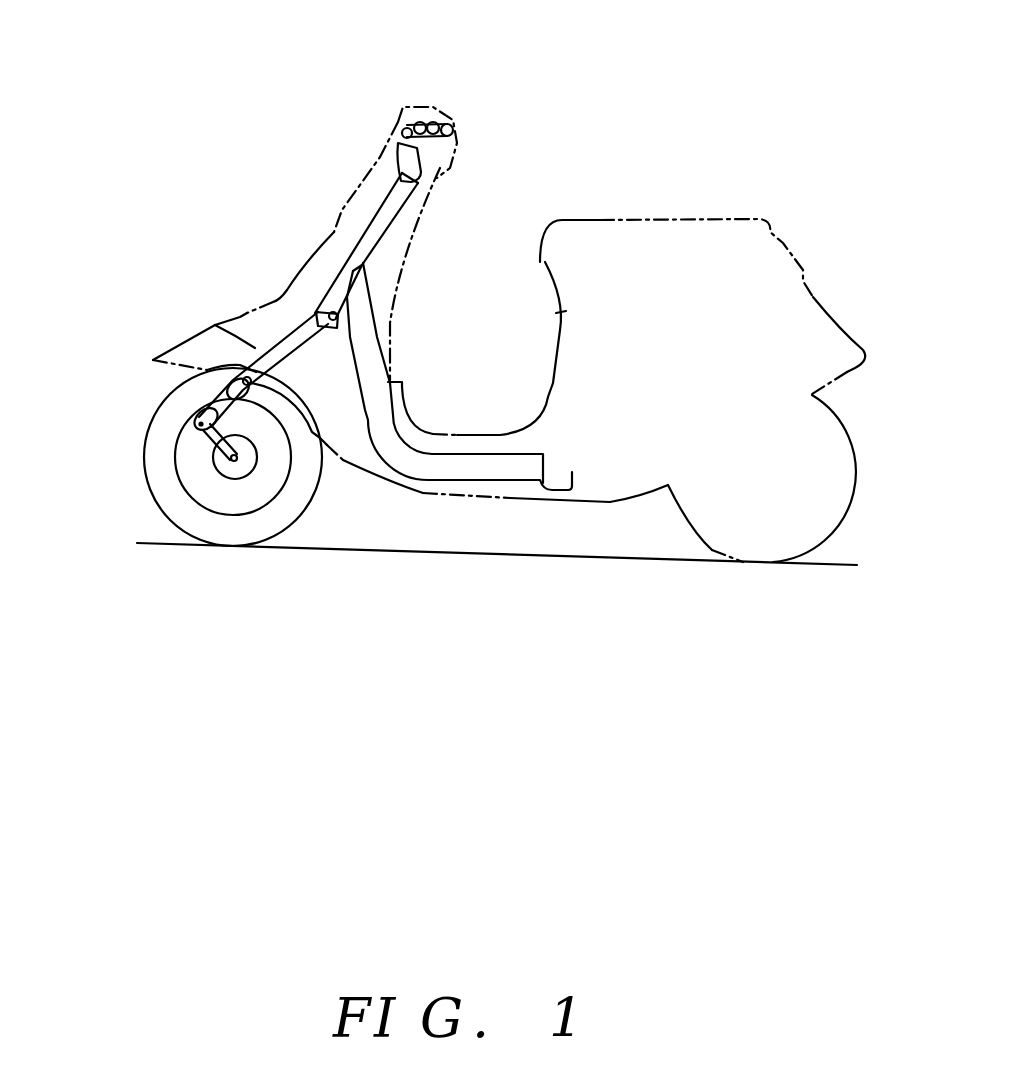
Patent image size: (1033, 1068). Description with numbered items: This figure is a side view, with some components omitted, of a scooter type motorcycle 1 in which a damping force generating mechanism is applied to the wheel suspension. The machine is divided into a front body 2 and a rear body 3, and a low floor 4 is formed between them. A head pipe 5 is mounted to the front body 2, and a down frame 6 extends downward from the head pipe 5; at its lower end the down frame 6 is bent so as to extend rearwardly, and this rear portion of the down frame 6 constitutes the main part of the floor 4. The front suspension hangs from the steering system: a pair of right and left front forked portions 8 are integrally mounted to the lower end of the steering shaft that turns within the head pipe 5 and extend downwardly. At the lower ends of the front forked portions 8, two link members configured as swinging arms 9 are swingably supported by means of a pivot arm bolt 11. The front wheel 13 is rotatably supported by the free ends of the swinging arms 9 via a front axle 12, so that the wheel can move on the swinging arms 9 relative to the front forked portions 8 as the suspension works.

The scooter type motorcycle 1 is at (567, 135).
The front body 2 is at (300, 235).
The rear body 3 is at (698, 206).
The low floor 4 is at (480, 422).
The head pipe 5 is at (362, 227).
The down frame 6 is at (397, 380).
The front forked portions 8 is at (215, 325).
The swinging arms 9 is at (212, 455).
The pivot arm bolt 11 is at (195, 423).
The front axle 12 is at (200, 483).
The front wheel 13 is at (312, 518).